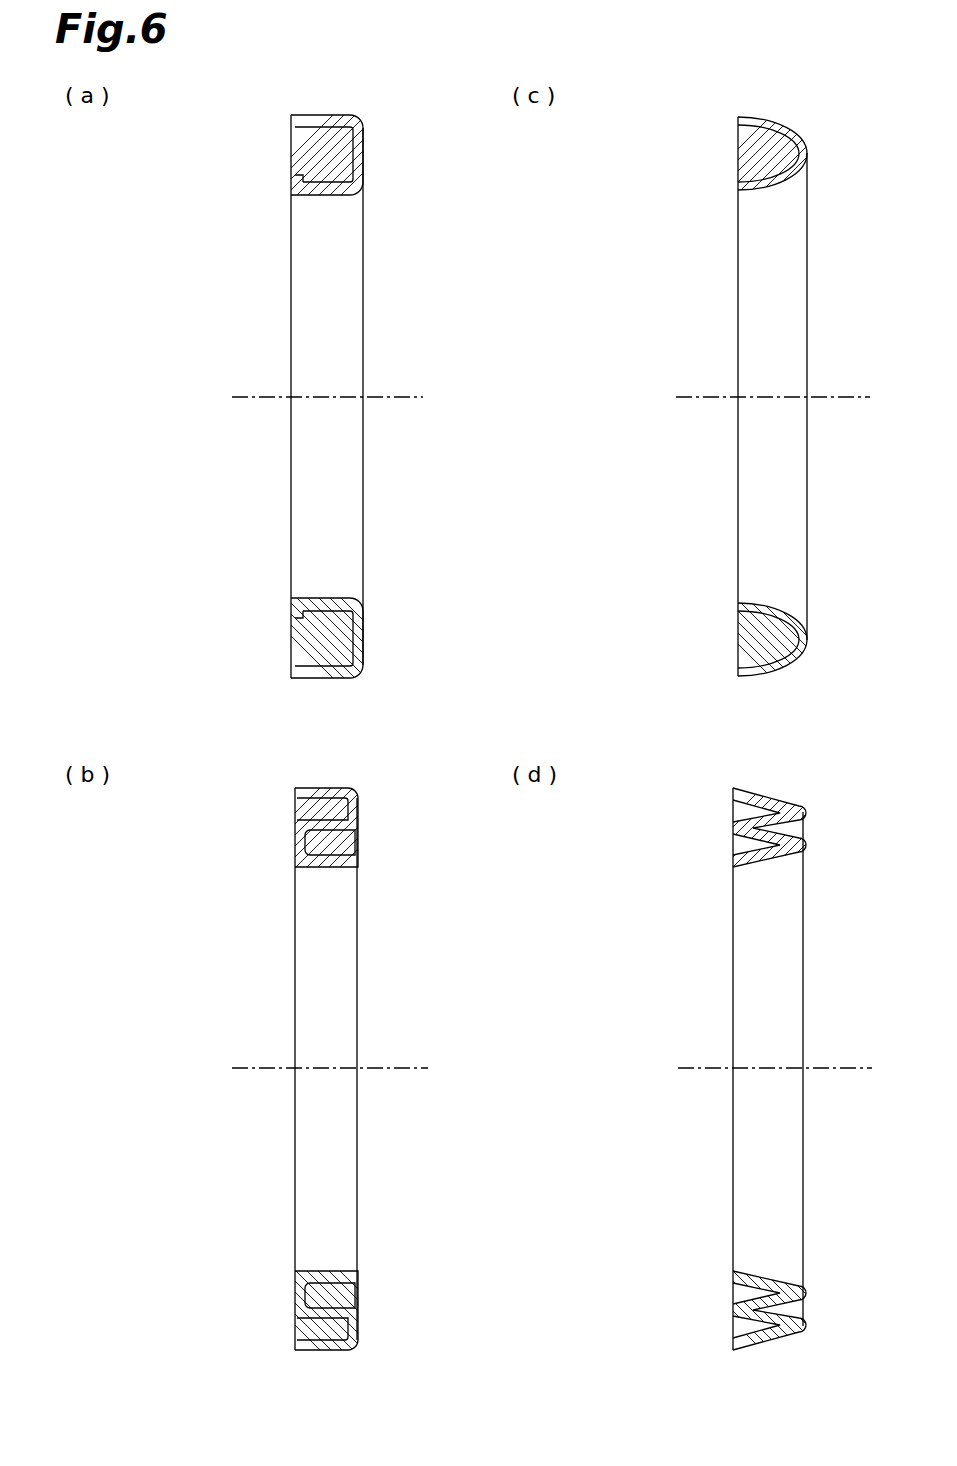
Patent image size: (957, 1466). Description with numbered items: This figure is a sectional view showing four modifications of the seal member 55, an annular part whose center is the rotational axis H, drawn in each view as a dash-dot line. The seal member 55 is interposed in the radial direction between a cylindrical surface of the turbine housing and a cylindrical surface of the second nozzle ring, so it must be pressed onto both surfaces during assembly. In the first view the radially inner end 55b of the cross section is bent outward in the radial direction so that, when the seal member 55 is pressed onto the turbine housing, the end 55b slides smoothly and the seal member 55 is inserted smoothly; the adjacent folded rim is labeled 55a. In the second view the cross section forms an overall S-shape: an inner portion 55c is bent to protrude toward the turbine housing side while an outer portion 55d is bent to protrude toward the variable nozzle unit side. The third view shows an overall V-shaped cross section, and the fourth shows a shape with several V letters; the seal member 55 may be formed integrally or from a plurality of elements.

The seal member 55 is at (353, 217).
The folded rim portion 55a is at (290, 117).
The inner end 55b is at (294, 178).
The inner portion 55c is at (295, 855).
The outer portion 55d is at (359, 810).
The rotational axis H is at (395, 395).